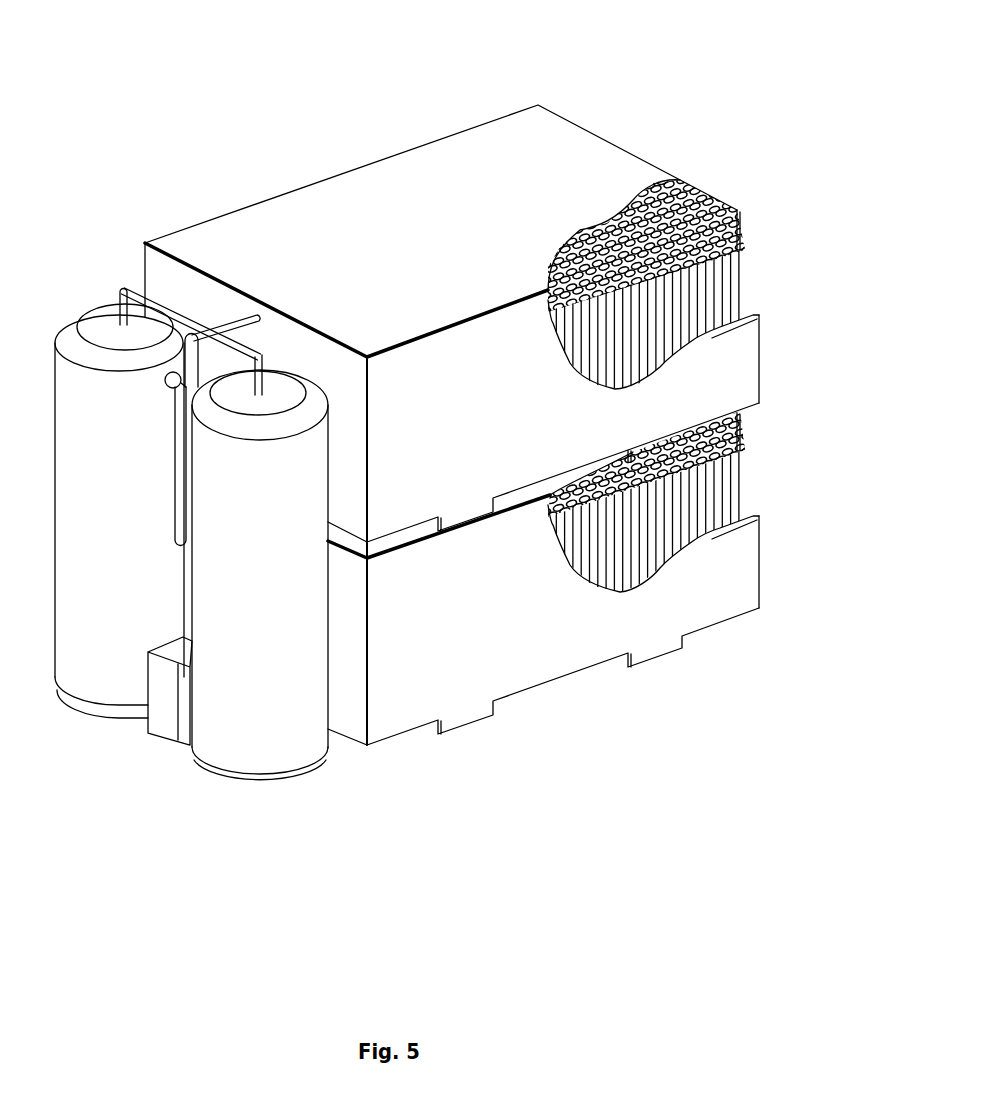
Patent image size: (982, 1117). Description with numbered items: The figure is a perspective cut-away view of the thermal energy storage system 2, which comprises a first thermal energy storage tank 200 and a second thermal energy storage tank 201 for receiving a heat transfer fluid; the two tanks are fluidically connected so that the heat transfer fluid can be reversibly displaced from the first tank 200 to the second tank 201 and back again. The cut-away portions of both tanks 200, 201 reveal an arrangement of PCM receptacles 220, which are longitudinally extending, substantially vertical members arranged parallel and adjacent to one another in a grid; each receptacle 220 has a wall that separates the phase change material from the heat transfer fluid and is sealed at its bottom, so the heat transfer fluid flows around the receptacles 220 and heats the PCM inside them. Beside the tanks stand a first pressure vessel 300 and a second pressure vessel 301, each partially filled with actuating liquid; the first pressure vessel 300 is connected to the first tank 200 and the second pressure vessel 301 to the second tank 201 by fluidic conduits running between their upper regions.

The thermal energy storage system 2 is at (434, 440).
The first thermal energy storage tank 200 is at (508, 112).
The second thermal energy storage tank 201 is at (537, 687).
The PCM receptacles 220 is at (738, 253).
The first pressure vessel 300 is at (85, 322).
The second pressure vessel 301 is at (240, 773).